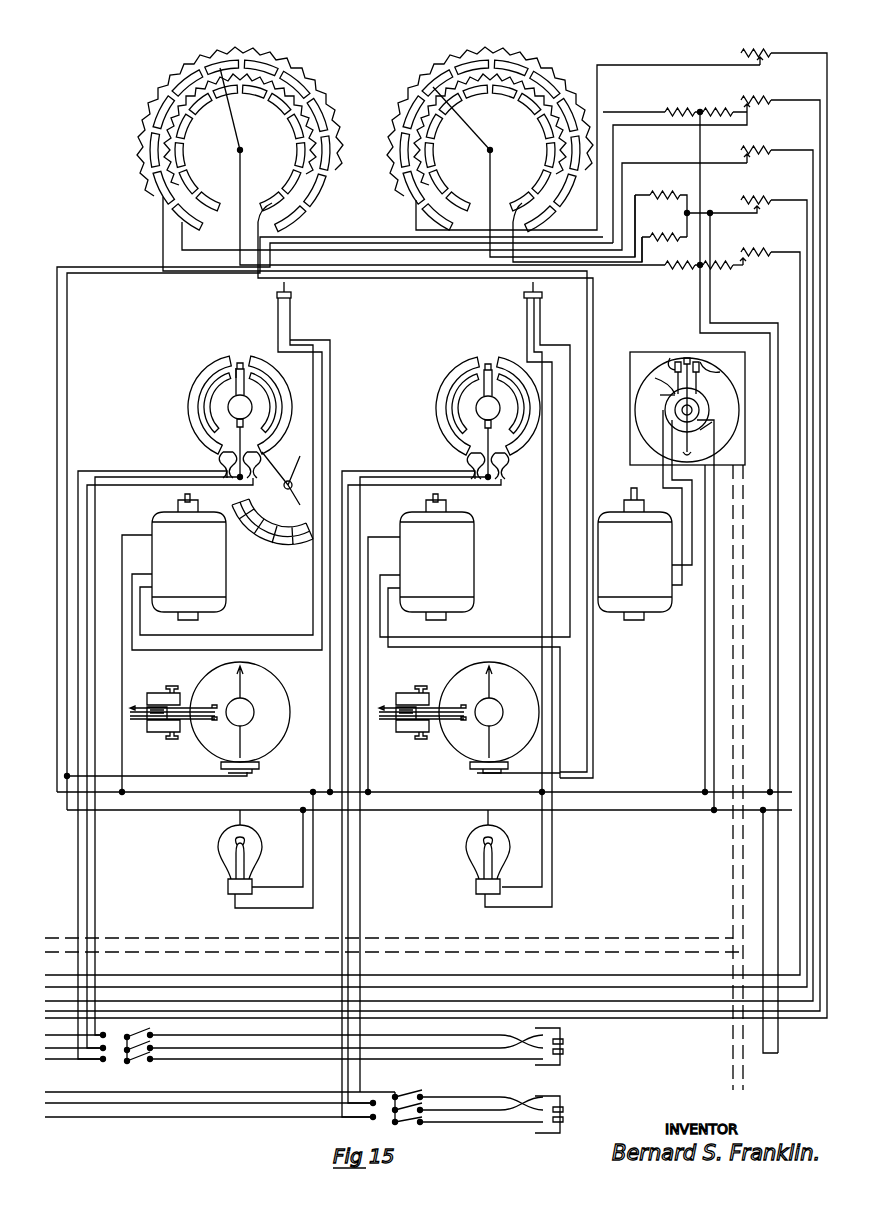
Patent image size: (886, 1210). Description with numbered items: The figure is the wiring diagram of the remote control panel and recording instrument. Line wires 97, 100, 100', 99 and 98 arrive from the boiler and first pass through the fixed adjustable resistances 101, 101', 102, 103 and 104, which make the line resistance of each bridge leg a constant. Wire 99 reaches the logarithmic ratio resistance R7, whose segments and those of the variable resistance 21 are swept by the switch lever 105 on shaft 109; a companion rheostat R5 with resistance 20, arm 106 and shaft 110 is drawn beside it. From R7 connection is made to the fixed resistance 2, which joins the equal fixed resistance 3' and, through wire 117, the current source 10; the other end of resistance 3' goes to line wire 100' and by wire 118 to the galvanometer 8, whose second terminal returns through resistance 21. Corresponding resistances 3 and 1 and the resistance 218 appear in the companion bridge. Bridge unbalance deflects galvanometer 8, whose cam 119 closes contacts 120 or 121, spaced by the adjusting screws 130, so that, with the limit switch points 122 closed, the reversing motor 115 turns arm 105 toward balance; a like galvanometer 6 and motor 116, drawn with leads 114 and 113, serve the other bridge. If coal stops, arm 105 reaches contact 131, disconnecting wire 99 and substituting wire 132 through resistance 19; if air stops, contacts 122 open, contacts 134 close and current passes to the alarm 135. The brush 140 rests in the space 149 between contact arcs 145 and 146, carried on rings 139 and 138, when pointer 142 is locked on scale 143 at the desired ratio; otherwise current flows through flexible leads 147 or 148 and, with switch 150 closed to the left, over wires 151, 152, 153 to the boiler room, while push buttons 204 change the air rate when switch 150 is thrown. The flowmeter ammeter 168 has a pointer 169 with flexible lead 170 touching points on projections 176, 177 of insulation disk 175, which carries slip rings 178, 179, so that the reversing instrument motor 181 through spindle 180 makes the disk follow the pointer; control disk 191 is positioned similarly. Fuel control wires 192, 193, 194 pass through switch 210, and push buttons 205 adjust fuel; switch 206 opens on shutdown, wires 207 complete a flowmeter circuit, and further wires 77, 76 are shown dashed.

The logarithmic ratio resistance R7 is at (262, 60).
The rheostat R5 is at (512, 60).
The switch lever 105 is at (233, 129).
The wiper arm 106 is at (464, 122).
The shaft 109 is at (238, 154).
The shaft 110 is at (488, 152).
The variable resistance 21 is at (293, 126).
The resistance 20 is at (541, 126).
The contact 131 is at (182, 232).
The fixed adjustable resistance 101 is at (757, 48).
The fixed adjustable resistance 101' is at (695, 160).
The fixed adjustable resistance 102 is at (757, 145).
The fixed adjustable resistance 103 is at (757, 191).
The fixed adjustable resistance 104 is at (756, 247).
The wire 100 is at (436, 525).
The line wire 100' is at (435, 544).
The wire 99 is at (429, 569).
The wire 98 is at (428, 588).
The wire 97 is at (429, 607).
The fixed resistance 2 is at (684, 108).
The fixed resistance 3' is at (721, 104).
The resistor 3 is at (683, 257).
The resistor 1 is at (733, 259).
The resistance 218 is at (661, 214).
The resistance 19 is at (664, 239).
The wire 118 is at (200, 275).
The contacts 134 is at (277, 296).
The limit switch points 122 is at (292, 293).
The wire 117 is at (699, 303).
The wire 132 is at (711, 303).
The space 149 is at (228, 356).
The brush 140 is at (251, 347).
The electromagnet 139 is at (212, 372).
The pole piece 138 is at (212, 388).
The contact arc 145 is at (200, 396).
The contact arc 146 is at (270, 392).
The flexible lead 147 is at (220, 470).
The flexible lead 148 is at (268, 466).
The pointer 142 is at (258, 542).
The scale 143 is at (258, 562).
The terminal 113 is at (185, 497).
The terminal 114 is at (430, 500).
The reversing motor 115 is at (189, 560).
The motor 116 is at (437, 560).
The control disk 191 is at (492, 362).
The projection 176 is at (664, 350).
The pointer 169 is at (678, 364).
The ammeter 168 is at (720, 360).
The slip ring 178 is at (665, 395).
The slip ring 179 is at (660, 406).
The projection 177 is at (720, 380).
The flexible lead 170 is at (700, 417).
The insulation disk 175 is at (636, 448).
The spindle 180 is at (630, 496).
The reversing instrument motor 181 is at (635, 560).
The adjusting screws 130 is at (186, 690).
The contact 120 is at (228, 695).
The contact 121 is at (218, 725).
The cam 119 is at (243, 688).
The galvanometer 8 is at (178, 720).
The dial 6 is at (459, 717).
The current source 10 is at (652, 794).
The alarm 135 is at (217, 851).
The conductor 77 is at (389, 939).
The conductor 76 is at (394, 952).
The wire 151 is at (294, 1036).
The wire 152 is at (294, 1044).
The wire 153 is at (294, 1056).
The switch 150 is at (131, 1057).
The control wire 192 is at (294, 1094).
The control wire 193 is at (294, 1102).
The control wire 194 is at (294, 1114).
The switch 210 is at (400, 1097).
The push buttons 204 is at (568, 1046).
The push buttons 205 is at (568, 1114).
The switch 206 is at (772, 1045).
The wires 207 is at (738, 789).